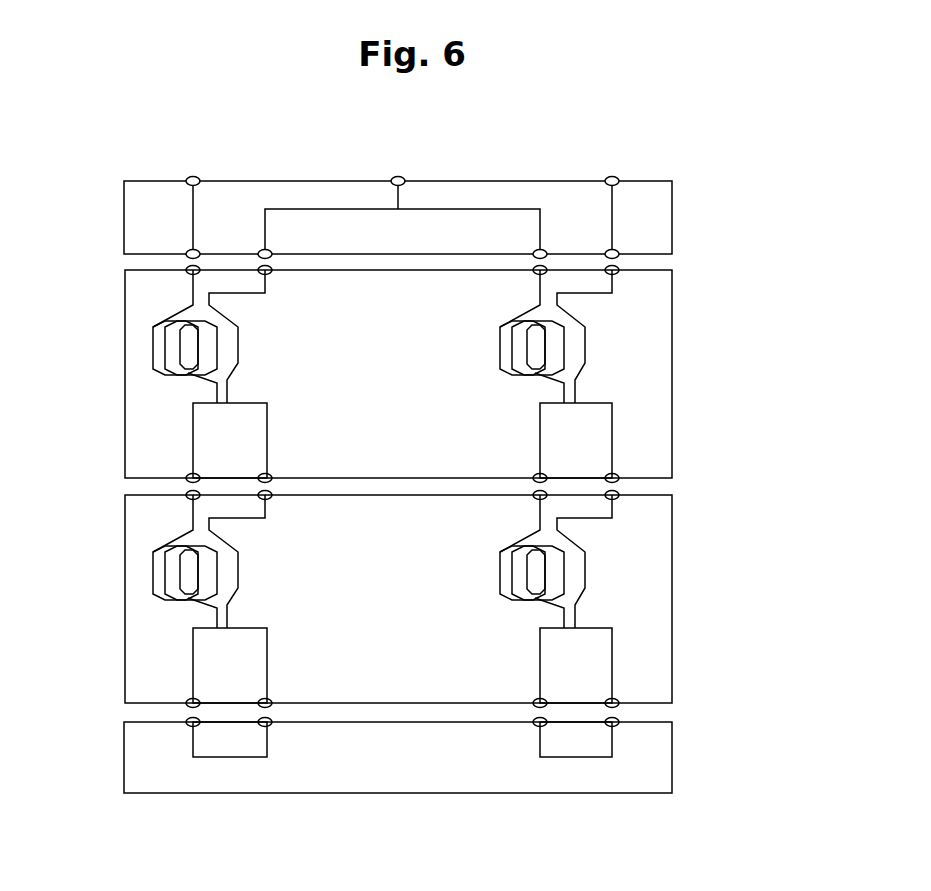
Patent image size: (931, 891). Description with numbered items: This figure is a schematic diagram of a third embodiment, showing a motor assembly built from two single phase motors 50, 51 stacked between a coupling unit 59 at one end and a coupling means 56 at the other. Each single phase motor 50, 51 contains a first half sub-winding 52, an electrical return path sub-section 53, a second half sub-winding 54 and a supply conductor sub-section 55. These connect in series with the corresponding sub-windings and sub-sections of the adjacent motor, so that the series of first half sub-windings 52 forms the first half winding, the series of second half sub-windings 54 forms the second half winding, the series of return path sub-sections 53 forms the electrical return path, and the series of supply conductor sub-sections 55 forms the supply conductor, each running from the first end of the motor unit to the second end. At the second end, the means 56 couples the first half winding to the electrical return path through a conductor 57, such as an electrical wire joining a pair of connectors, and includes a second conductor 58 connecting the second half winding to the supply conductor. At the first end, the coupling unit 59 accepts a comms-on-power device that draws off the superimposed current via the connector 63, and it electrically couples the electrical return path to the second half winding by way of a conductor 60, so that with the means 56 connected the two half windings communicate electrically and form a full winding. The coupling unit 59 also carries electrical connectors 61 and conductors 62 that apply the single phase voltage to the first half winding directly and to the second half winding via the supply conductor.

The single phase motor 50 is at (672, 363).
The single phase motor 51 is at (672, 630).
The first half sub-winding 52 is at (158, 321).
The electrical return path sub-section 53 is at (268, 422).
The second half sub-winding 54 is at (505, 318).
The supply conductor sub-section 55 is at (596, 402).
The means for coupling 56 is at (672, 757).
The conductor 57 is at (228, 757).
The second conductor 58 is at (580, 757).
The coupling unit 59 is at (672, 213).
The conductor 60 is at (460, 208).
The electrical connectors 61 is at (190, 177).
The conductors 62 is at (195, 218).
The connector 63 is at (398, 176).